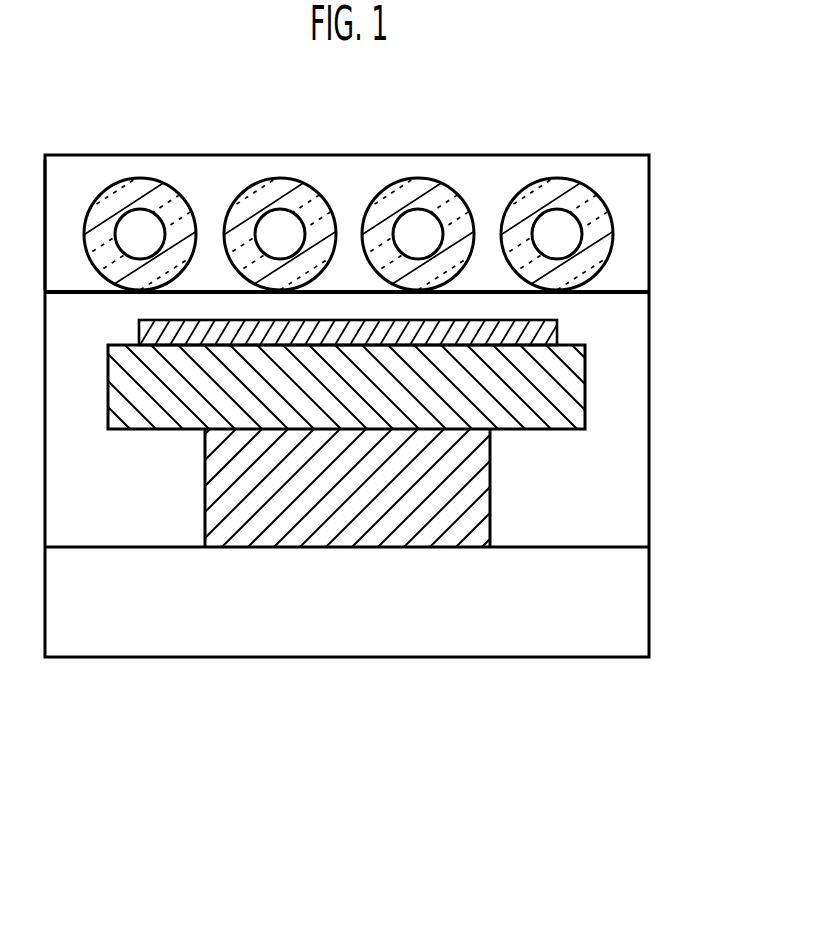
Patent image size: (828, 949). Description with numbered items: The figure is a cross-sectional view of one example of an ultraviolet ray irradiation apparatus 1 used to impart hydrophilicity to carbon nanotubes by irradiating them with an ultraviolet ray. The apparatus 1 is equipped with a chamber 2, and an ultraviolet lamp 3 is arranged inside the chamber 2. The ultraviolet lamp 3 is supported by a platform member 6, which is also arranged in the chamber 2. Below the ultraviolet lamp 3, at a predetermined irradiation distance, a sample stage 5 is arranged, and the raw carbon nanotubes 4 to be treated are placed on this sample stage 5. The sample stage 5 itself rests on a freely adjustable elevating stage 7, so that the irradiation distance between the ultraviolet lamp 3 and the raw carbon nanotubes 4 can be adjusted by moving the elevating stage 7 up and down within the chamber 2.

The ultraviolet ray irradiation apparatus 1 is at (617, 125).
The chamber 2 is at (650, 492).
The ultraviolet lamp 3 is at (145, 178).
The raw carbon nanotubes 4 is at (557, 331).
The sample stage 5 is at (585, 385).
The platform member 6 is at (620, 290).
The elevating stage 7 is at (490, 492).